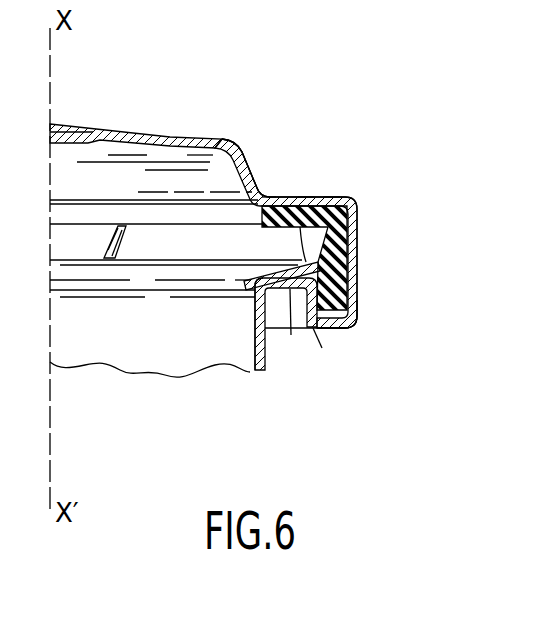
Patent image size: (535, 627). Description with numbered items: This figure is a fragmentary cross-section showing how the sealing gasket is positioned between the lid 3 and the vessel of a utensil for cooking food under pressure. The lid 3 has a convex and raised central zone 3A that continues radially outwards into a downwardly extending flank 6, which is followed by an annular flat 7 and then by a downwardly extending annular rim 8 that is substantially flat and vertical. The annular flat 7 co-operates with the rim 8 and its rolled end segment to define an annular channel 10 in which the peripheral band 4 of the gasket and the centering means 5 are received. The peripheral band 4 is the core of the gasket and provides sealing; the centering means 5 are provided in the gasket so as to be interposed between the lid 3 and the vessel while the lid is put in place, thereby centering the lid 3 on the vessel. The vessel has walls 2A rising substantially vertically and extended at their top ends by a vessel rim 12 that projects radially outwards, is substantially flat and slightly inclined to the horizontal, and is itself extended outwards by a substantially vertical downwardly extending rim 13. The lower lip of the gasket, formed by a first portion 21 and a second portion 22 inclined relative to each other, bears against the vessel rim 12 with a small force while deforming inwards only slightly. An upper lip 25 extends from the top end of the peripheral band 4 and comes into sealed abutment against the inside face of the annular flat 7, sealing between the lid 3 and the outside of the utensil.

The lid 3 is at (145, 131).
The convex and raised central zone 3A is at (190, 140).
The downwardly extending flank 6 is at (254, 196).
The upper lip 25 is at (268, 203).
The annular flat 7 is at (306, 199).
The first portion 21 is at (332, 198).
The annular channel 10 is at (362, 215).
The peripheral band 4 is at (335, 253).
The downwardly extending annular rim 8 is at (358, 276).
The centering means 5 is at (345, 306).
The vessel rim 12 is at (291, 335).
The downwardly extending rim 13 is at (322, 348).
The second portion 22 is at (250, 291).
The walls 2A is at (263, 353).